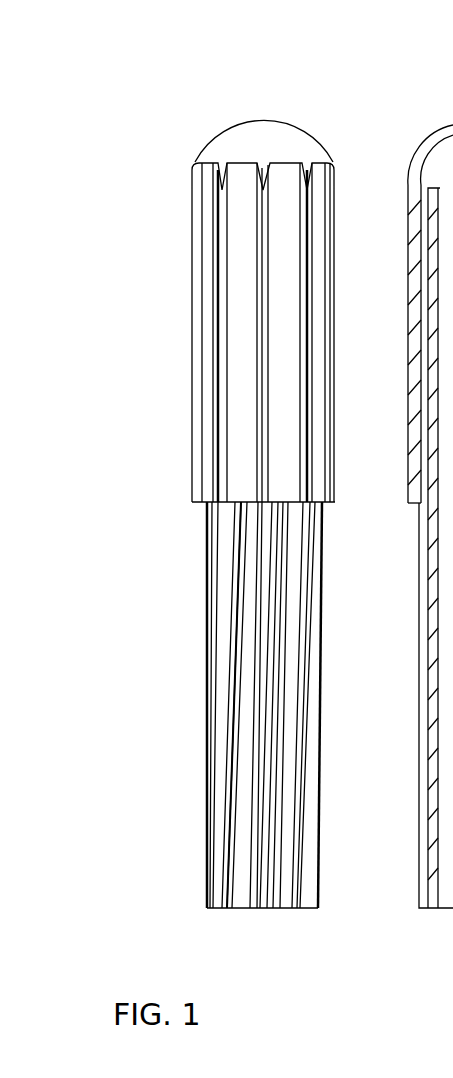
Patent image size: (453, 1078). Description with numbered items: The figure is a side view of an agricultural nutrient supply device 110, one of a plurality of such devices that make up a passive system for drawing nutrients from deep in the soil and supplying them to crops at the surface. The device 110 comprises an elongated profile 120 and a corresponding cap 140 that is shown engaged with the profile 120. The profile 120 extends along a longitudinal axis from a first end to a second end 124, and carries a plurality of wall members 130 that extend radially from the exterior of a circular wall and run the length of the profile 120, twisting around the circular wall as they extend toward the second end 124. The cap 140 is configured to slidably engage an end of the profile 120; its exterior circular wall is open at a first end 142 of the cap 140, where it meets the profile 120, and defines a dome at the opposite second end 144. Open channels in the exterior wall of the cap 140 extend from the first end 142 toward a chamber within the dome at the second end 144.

The agricultural nutrient supply device 110 is at (137, 183).
The cap 140 is at (320, 151).
The second end of the cap 144 is at (248, 118).
The first end of the cap 142 is at (203, 503).
The profile 120 is at (207, 745).
The wall member 130 is at (298, 776).
The second end of the profile 124 is at (257, 913).